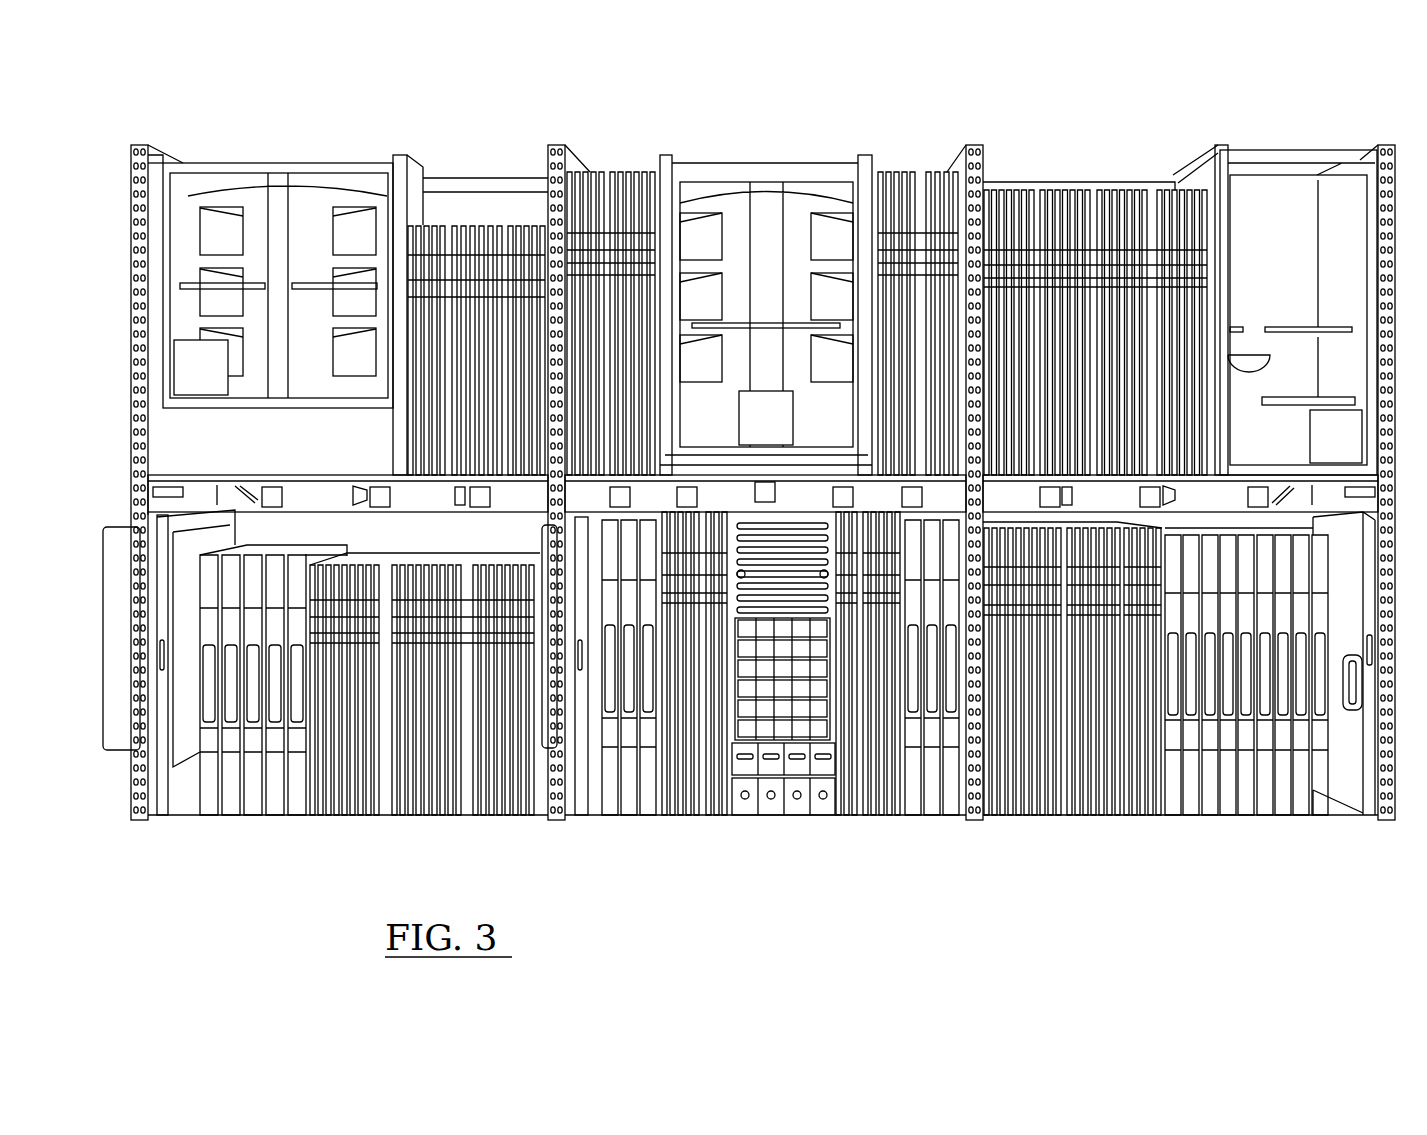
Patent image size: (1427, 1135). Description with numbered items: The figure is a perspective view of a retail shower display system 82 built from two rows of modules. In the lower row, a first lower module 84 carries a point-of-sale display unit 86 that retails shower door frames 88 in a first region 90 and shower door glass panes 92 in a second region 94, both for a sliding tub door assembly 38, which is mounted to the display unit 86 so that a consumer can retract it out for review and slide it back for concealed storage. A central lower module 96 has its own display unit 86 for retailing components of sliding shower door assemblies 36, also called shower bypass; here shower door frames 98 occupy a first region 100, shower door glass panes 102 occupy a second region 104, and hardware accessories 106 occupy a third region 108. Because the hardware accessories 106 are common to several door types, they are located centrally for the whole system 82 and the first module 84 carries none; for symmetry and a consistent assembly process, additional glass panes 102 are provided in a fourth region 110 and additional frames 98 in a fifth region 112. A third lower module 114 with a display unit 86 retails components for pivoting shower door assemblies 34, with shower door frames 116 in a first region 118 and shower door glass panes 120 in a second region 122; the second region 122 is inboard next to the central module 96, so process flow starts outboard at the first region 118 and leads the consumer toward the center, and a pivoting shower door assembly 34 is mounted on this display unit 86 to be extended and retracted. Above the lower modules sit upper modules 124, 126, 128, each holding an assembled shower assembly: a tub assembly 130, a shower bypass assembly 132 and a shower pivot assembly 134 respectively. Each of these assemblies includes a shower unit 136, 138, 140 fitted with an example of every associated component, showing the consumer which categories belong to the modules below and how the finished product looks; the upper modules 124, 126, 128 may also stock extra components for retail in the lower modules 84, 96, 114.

The pivoting shower door assembly 34 is at (1370, 815).
The sliding shower door assembly 36 is at (578, 815).
The sliding tub door assembly 38 is at (165, 815).
The retail shower display system 82 is at (185, 90).
The lower module 84 is at (305, 845).
The point-of-sale display unit 86 is at (148, 181).
The shower door frames 88 is at (208, 815).
The first region 90 is at (232, 815).
The shower door glass panes 92 is at (480, 225).
The second region 94 is at (372, 815).
The lower module 96 is at (762, 815).
The shower door frames 98 is at (628, 815).
The first region 100 is at (610, 815).
The shower door glass panes 102 is at (632, 172).
The second region 104 is at (687, 815).
The hardware accessories 106 is at (780, 815).
The third region 108 is at (810, 815).
The fourth region 110 is at (887, 815).
The fifth region 112 is at (933, 815).
The third lower module 114 is at (1230, 848).
The shower door frames 116 is at (1288, 815).
The first region 118 is at (1297, 815).
The shower door glass panes 120 is at (1075, 190).
The second region 122 is at (1105, 815).
The upper module 124 is at (281, 130).
The upper module 126 is at (744, 125).
The upper module 128 is at (1152, 145).
The tub assembly 130 is at (318, 160).
The shower bypass assembly 132 is at (786, 158).
The shower pivot assembly 134 is at (1340, 150).
The shower unit 136 is at (300, 453).
The shower unit 138 is at (733, 442).
The shower unit 140 is at (1300, 273).